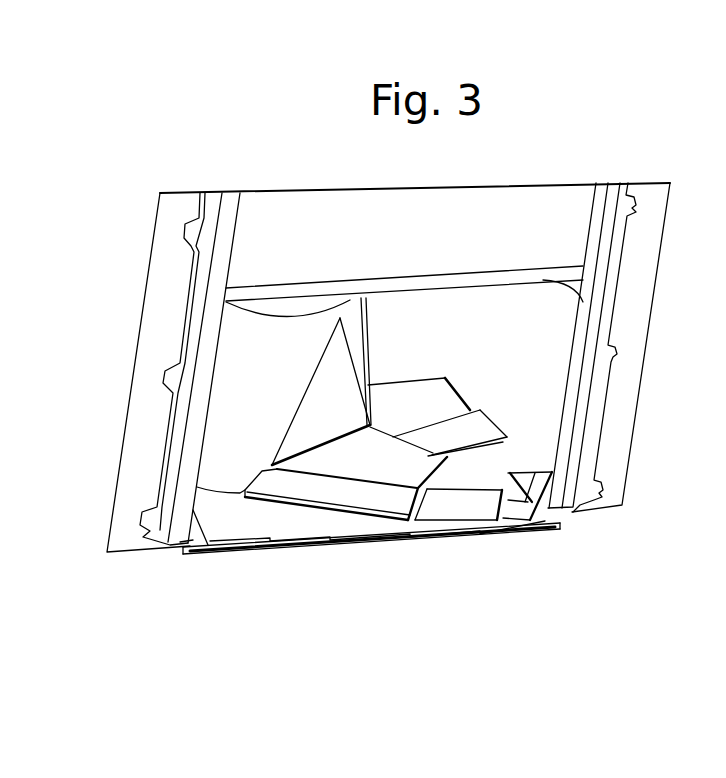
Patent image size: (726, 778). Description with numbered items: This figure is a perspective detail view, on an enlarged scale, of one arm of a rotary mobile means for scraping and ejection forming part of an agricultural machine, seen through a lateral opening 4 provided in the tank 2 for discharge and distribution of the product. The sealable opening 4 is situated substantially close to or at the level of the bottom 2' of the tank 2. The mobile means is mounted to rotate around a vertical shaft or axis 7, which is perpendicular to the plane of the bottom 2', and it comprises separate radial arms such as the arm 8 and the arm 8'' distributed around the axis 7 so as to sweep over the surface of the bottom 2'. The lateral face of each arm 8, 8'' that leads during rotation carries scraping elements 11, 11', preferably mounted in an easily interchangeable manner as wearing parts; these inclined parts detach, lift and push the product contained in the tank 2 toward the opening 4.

The tank 2 is at (381, 367).
The bottom of tank 2' is at (437, 522).
The sealable opening 4 is at (580, 302).
The vertical shaft or axis 7 is at (238, 415).
The radial arm 8 is at (444, 492).
The radial arm 8'' is at (543, 386).
The scraping element 11 is at (346, 562).
The scraping element 11' is at (559, 514).